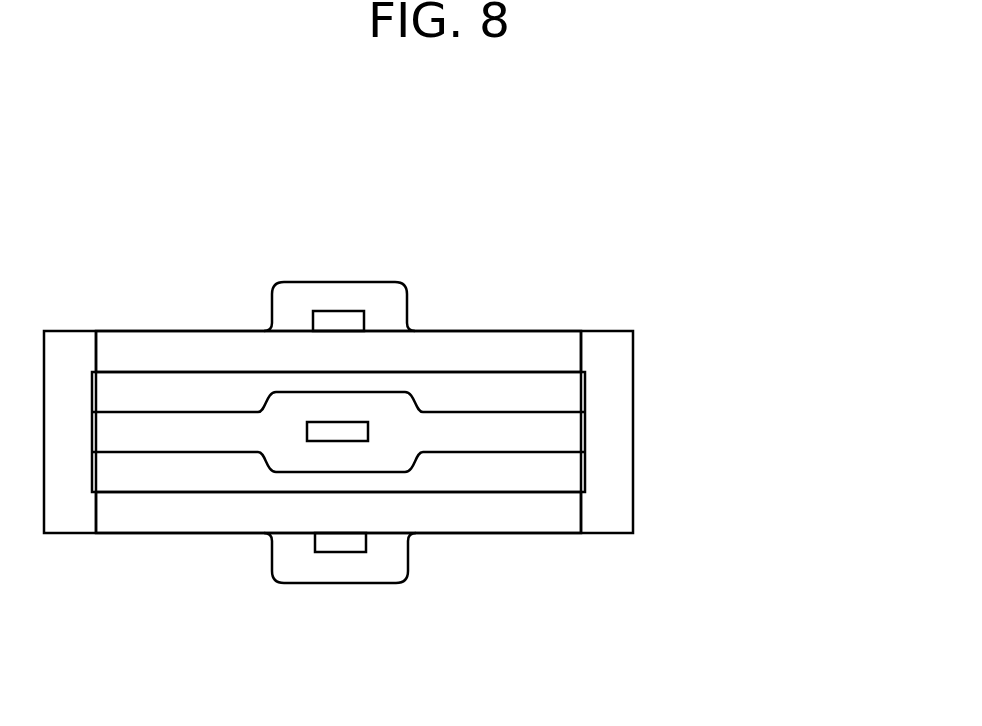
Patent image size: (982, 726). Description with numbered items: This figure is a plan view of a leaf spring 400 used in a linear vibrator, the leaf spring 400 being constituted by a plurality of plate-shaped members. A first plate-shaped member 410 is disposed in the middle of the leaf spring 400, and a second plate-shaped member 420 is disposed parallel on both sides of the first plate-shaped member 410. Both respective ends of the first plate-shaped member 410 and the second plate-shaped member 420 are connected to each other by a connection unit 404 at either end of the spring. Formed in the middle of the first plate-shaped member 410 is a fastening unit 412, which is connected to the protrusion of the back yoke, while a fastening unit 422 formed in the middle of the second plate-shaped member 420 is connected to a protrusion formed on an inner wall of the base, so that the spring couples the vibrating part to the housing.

The leaf spring 400 is at (646, 188).
The connection unit 404 is at (628, 427).
The first plate-shaped member 410 is at (538, 435).
The fastening unit 412 is at (298, 400).
The second plate-shaped member 420 is at (497, 343).
The fastening unit 422 is at (327, 287).